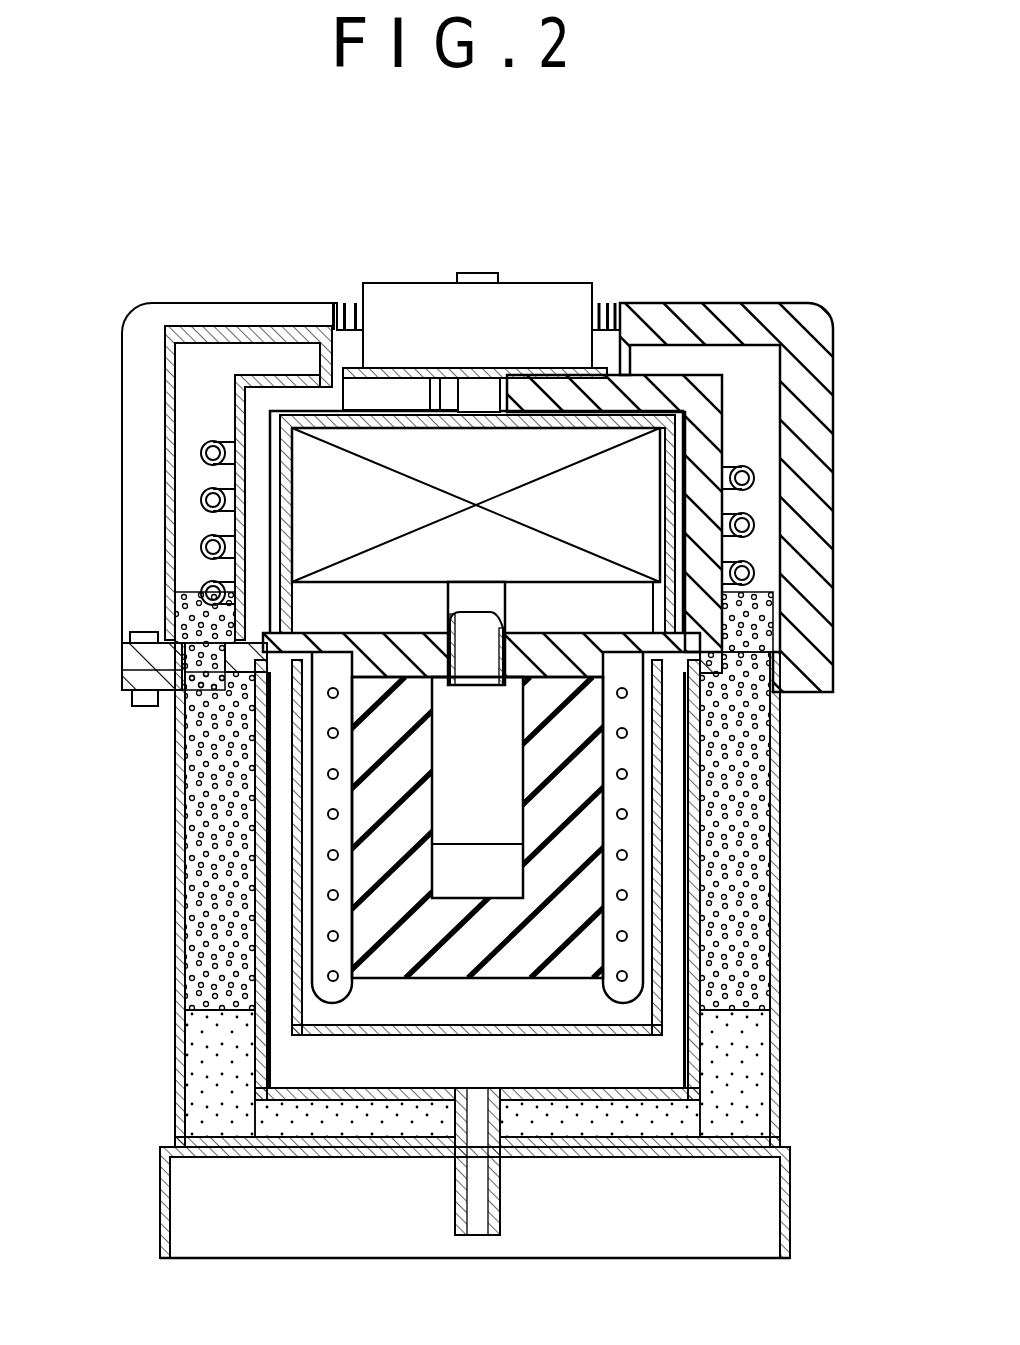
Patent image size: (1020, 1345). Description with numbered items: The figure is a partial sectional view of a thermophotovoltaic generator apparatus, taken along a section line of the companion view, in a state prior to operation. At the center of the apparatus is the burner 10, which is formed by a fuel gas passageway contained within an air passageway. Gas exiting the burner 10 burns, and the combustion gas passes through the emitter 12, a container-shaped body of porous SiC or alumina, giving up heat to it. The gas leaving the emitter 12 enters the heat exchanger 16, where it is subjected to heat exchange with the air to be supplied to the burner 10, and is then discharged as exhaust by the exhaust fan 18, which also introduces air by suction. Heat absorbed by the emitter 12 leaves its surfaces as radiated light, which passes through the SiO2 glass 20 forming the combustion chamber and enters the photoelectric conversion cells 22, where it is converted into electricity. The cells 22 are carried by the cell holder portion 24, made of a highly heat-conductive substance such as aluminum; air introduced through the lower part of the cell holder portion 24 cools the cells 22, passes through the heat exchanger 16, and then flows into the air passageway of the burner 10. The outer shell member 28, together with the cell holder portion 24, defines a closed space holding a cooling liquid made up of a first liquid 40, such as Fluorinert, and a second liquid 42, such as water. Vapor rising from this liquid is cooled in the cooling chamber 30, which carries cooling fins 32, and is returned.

The burner 10 is at (320, 828).
The emitter 12 is at (365, 853).
The heat exchanger 16 is at (645, 465).
The exhaust fan 18 is at (553, 307).
The SiO2 glass 20 is at (665, 733).
The photoelectric conversion cells 22 is at (683, 818).
The cell holder portion 24 is at (692, 935).
The outer shell member 28 is at (775, 1105).
The cooling chamber 30 is at (760, 366).
The cooling fins 32 is at (142, 403).
The first liquid 40 is at (735, 1040).
The second liquid 42 is at (740, 882).